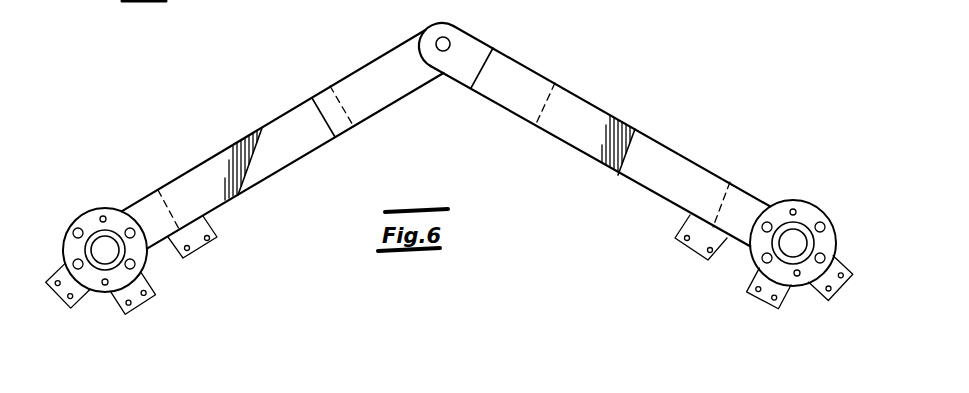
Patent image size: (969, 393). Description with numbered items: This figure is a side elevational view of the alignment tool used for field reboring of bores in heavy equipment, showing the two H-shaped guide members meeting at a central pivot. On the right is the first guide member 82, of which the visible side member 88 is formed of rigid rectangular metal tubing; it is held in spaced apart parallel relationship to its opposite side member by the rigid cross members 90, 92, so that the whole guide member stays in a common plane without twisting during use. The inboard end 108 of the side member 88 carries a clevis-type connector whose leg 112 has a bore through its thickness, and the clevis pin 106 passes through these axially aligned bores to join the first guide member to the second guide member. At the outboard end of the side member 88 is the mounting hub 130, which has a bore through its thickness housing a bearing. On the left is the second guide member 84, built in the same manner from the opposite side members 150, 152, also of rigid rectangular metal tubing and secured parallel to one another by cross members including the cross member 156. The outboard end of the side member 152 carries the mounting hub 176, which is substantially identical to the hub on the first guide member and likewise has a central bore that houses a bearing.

The first guide member 82 is at (680, 138).
The second guide member 84 is at (230, 129).
The side member 88 is at (655, 137).
The cross member 90 is at (690, 214).
The cross member 92 is at (565, 117).
The clevis pin 106 is at (450, 39).
The inboard end 108 is at (490, 65).
The leg 112 is at (477, 38).
The mounting hub 130 is at (831, 221).
The side member 150 is at (271, 165).
The side member 152 is at (193, 196).
The cross member 156 is at (322, 119).
The mounting hub 176 is at (143, 268).